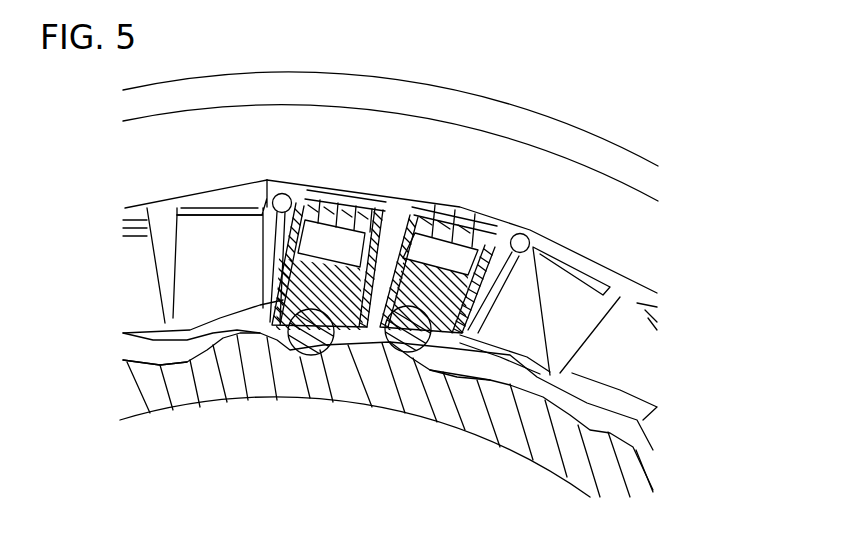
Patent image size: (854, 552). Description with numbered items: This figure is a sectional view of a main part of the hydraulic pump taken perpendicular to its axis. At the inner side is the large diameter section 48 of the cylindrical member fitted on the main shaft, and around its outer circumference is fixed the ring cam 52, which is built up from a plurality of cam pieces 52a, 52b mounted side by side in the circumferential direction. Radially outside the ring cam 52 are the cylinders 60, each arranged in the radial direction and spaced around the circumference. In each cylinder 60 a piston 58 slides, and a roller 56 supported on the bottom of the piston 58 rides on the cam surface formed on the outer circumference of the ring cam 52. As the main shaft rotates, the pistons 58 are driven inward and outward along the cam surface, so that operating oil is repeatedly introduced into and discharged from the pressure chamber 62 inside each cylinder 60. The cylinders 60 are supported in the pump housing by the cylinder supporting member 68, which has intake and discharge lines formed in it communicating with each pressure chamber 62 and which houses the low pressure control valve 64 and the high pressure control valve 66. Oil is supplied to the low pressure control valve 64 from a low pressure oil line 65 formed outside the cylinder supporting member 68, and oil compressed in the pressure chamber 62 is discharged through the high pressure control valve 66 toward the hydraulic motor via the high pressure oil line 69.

The large diameter section 48 is at (363, 445).
The ring cam 52 is at (153, 426).
The cam piece 52a is at (212, 395).
The cam piece 52b is at (452, 422).
The roller 56 is at (290, 362).
The piston 58 is at (280, 288).
The cylinder 60 is at (388, 227).
The pressure chamber 62 is at (273, 242).
The low pressure control valve 64 is at (322, 190).
The low pressure oil line 65 is at (590, 183).
The high pressure control valve 66 is at (363, 197).
The cylinder supporting member 68 is at (527, 220).
The high pressure oil line 69 is at (282, 193).